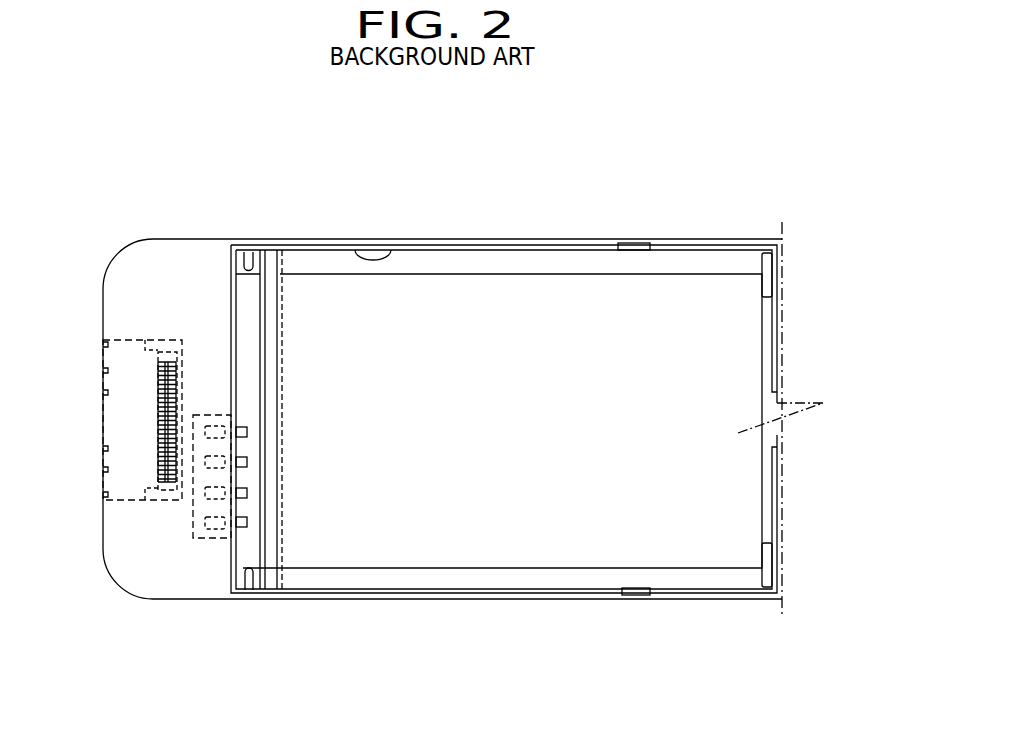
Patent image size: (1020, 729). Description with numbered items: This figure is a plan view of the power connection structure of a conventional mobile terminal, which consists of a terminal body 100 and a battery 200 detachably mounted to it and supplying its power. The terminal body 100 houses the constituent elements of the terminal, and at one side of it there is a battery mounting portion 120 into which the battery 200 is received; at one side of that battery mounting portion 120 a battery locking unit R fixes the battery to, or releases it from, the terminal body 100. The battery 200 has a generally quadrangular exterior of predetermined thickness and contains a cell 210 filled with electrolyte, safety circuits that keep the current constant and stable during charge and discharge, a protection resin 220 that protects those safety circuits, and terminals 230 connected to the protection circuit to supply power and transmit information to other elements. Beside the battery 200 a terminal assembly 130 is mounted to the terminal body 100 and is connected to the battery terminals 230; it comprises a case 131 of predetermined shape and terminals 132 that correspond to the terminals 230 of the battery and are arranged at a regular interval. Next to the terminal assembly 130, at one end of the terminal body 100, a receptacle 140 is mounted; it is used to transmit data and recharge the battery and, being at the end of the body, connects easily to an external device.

The terminal body 100 is at (123, 251).
The battery mounting portion 120 is at (357, 250).
The terminal assembly 130 is at (190, 533).
The case 131 is at (212, 533).
The terminals 132 is at (247, 598).
The receptacle 140 is at (128, 337).
The battery 200 is at (556, 245).
The cell 210 is at (475, 285).
The protection resin 220 is at (244, 284).
The terminals 230 is at (250, 522).
The battery locking unit R is at (781, 395).